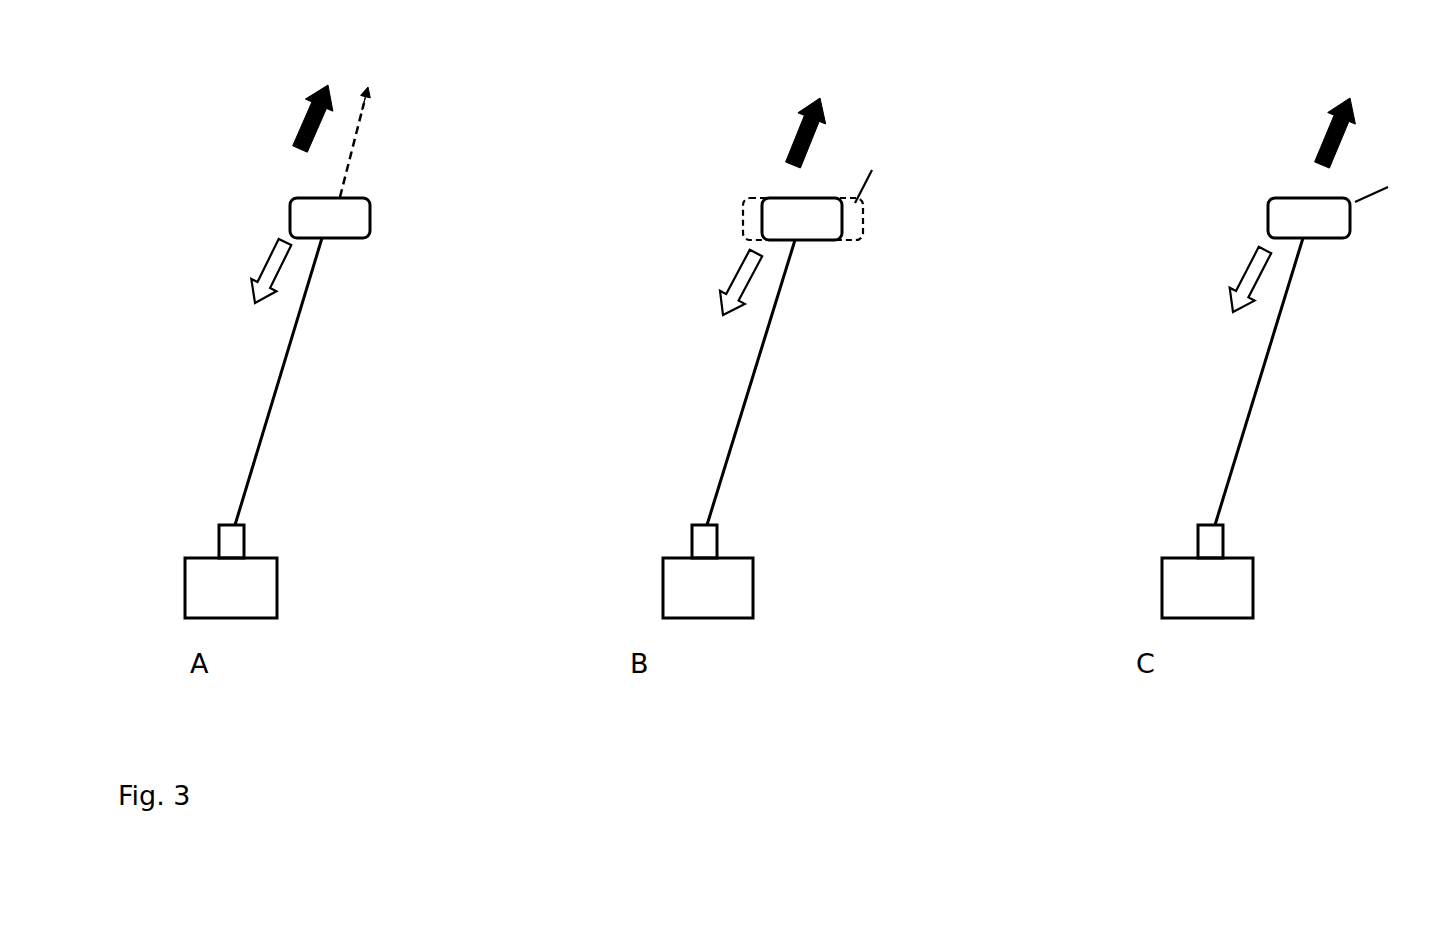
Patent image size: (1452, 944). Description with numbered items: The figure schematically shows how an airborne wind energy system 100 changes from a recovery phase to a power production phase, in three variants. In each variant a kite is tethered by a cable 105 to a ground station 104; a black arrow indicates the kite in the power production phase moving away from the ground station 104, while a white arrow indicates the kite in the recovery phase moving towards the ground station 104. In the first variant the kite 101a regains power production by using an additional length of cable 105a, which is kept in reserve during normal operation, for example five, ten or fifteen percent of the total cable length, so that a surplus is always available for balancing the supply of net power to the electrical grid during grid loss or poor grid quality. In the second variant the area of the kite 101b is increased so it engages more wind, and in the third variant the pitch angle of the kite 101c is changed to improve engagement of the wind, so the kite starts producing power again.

The airborne wind energy system 100 is at (175, 348).
The kite 101a is at (350, 248).
The kite 101b is at (827, 243).
The kite 101c is at (1352, 248).
The ground station 104 is at (182, 557).
The cable 105 is at (302, 378).
The additional length of cable 105a is at (373, 123).